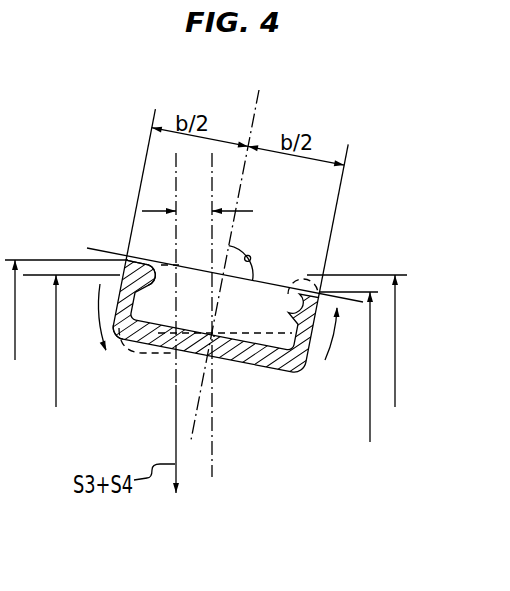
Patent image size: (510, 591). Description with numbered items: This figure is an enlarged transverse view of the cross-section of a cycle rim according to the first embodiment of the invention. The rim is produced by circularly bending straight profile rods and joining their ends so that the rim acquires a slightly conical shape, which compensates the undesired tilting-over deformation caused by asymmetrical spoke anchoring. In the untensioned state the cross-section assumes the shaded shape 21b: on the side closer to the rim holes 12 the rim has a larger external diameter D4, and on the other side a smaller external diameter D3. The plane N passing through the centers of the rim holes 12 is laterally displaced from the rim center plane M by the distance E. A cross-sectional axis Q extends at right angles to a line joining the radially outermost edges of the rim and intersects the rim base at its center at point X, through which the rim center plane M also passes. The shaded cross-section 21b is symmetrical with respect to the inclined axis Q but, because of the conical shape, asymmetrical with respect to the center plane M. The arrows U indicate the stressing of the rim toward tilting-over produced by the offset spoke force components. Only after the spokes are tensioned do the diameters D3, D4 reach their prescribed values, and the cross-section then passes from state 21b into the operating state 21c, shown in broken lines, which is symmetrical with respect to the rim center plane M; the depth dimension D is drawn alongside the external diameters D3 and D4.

The rim holes 12 is at (181, 333).
The untensioned state of the rim cross-section 21b is at (127, 257).
The operating state of the rim cross-section 21c is at (134, 347).
The center point of the rim base X is at (226, 356).
The cross-sectional axis Q is at (258, 92).
The plane passing through the centers of the rim holes N is at (175, 175).
The rim center plane M is at (213, 174).
The distance E is at (197, 207).
The arrows indicating tilting-over U is at (218, 322).
The depth dimension D is at (232, 341).
The smaller external diameter D3 is at (377, 383).
The larger external diameter D4 is at (18, 324).